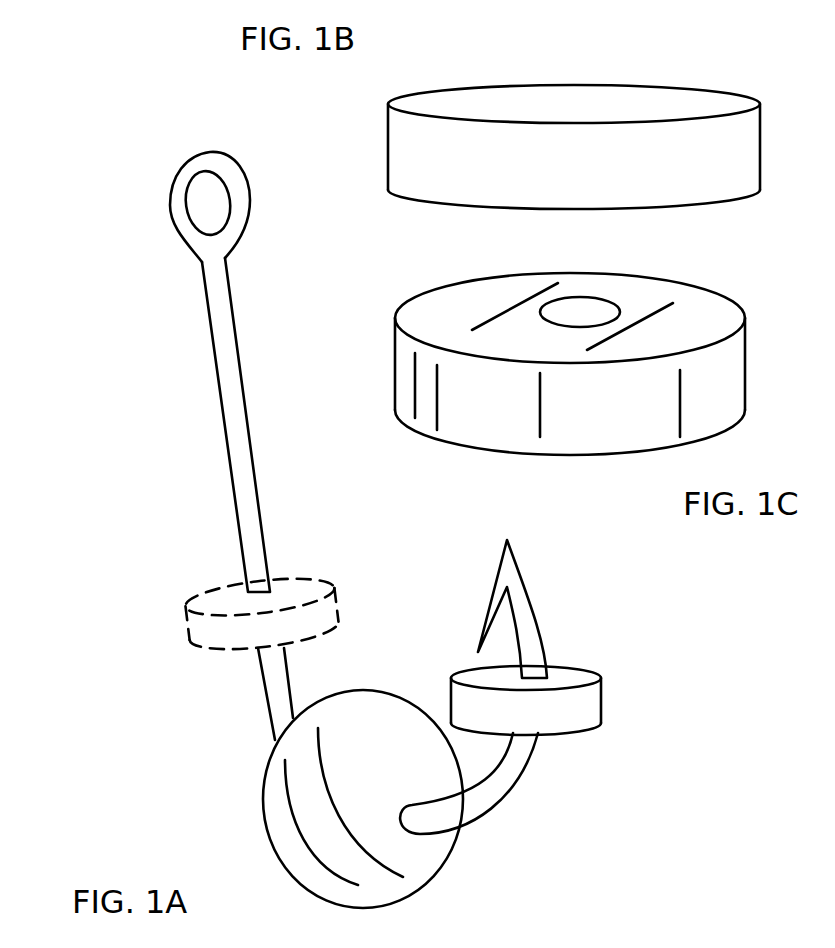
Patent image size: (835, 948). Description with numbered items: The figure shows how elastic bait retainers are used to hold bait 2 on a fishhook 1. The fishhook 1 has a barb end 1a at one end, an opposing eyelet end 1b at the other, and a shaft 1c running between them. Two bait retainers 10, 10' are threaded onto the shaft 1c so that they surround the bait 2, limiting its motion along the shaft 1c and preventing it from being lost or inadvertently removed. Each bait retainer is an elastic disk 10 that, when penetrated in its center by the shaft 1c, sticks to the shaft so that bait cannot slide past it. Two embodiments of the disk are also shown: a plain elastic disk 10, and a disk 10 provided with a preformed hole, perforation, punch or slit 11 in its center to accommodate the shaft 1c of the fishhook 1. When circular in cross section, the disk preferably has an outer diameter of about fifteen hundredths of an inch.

In FIG. 1A, the fishhook 1 is at (188, 496).
In FIG. 1A, the barb end 1a is at (534, 571).
In FIG. 1A, the eyelet end 1b is at (158, 229).
In FIG. 1A, the shaft 1c is at (273, 492).
In FIG. 1A, the bait 2 is at (373, 776).
In FIG. 1A, the bait retainer 10 is at (589, 673).
In FIG. 1B, the bait retainer 10 is at (574, 119).
In FIG. 1C, the bait retainer 10 is at (560, 334).
In FIG. 1A, the bait retainer 10' is at (202, 634).
In FIG. 1C, the hole 11 is at (535, 323).